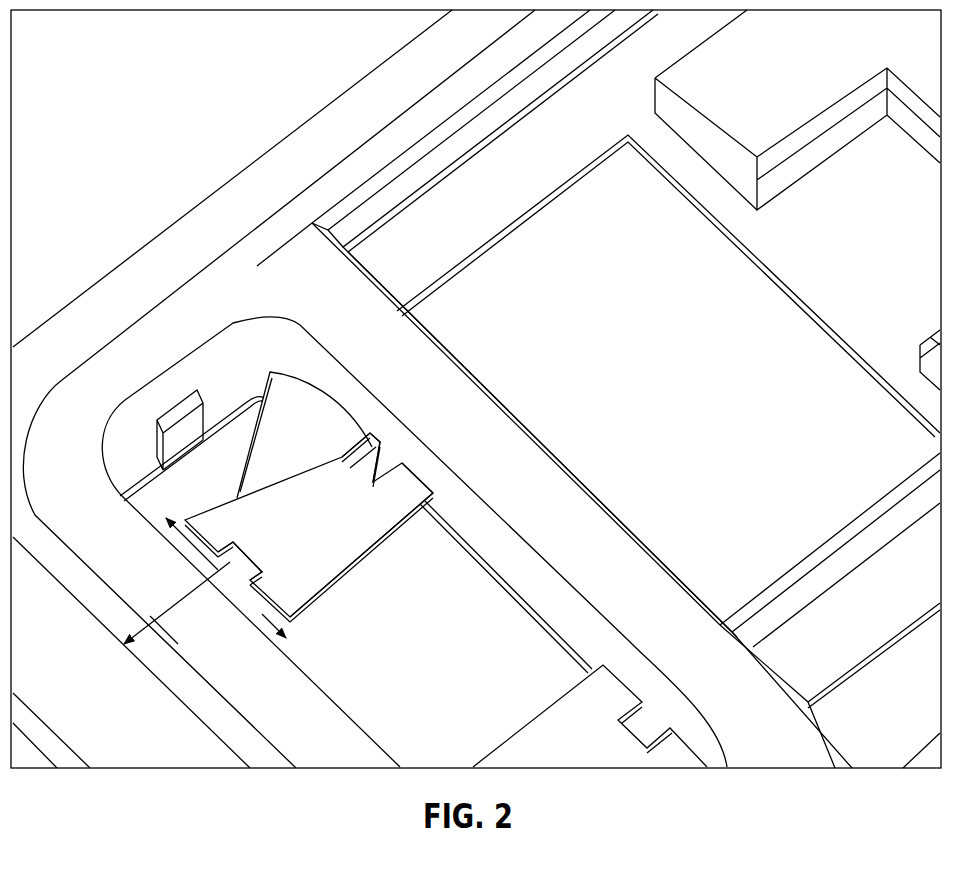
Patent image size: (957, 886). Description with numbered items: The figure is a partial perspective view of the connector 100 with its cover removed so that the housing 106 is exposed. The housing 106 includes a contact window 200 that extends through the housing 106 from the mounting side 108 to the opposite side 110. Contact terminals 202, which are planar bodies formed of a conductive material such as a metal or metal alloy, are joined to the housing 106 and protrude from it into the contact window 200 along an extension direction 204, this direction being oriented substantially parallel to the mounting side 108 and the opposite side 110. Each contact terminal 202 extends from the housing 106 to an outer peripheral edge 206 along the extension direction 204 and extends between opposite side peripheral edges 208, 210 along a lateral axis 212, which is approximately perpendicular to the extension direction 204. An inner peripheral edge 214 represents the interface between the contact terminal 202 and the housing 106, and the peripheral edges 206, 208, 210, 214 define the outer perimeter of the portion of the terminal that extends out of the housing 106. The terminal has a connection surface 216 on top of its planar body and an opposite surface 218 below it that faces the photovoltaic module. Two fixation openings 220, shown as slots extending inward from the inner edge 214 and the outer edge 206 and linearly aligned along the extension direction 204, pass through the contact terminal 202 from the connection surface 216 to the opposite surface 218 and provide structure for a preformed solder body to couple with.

The connector 100 is at (272, 76).
The housing 106 is at (240, 174).
The mounting side 108 is at (162, 418).
The opposite side 110 is at (100, 347).
The contact window 200 is at (446, 523).
The contact terminal 202 is at (345, 545).
The extension direction 204 is at (178, 612).
The outer peripheral edge 206 is at (185, 537).
The side peripheral edge 208 is at (213, 497).
The side peripheral edge 210 is at (330, 592).
The lateral axis 212 is at (140, 614).
The inner peripheral edge 214 is at (415, 477).
The connection surface 216 is at (380, 503).
The opposite surface 218 is at (378, 552).
The fixation opening 220 is at (243, 545).